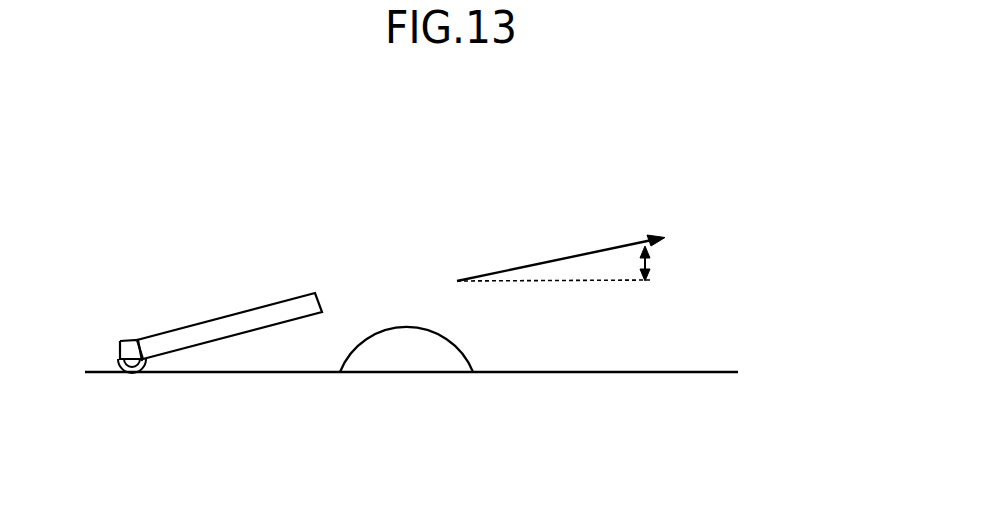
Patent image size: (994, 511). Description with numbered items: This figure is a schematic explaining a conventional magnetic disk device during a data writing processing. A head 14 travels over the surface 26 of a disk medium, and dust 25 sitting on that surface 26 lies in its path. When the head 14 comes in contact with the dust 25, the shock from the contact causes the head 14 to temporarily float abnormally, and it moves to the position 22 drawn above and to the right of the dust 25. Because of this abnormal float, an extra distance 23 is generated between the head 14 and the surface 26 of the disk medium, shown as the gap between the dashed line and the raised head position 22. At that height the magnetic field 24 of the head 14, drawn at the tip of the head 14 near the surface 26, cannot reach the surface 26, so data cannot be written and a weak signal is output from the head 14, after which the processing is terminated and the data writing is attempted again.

The head 14 is at (210, 325).
The position of abnormal float of head 22 is at (532, 263).
The extra distance 23 is at (648, 267).
The magnetic field 24 is at (132, 373).
The dust 25 is at (407, 366).
The surface of disk medium 26 is at (587, 374).